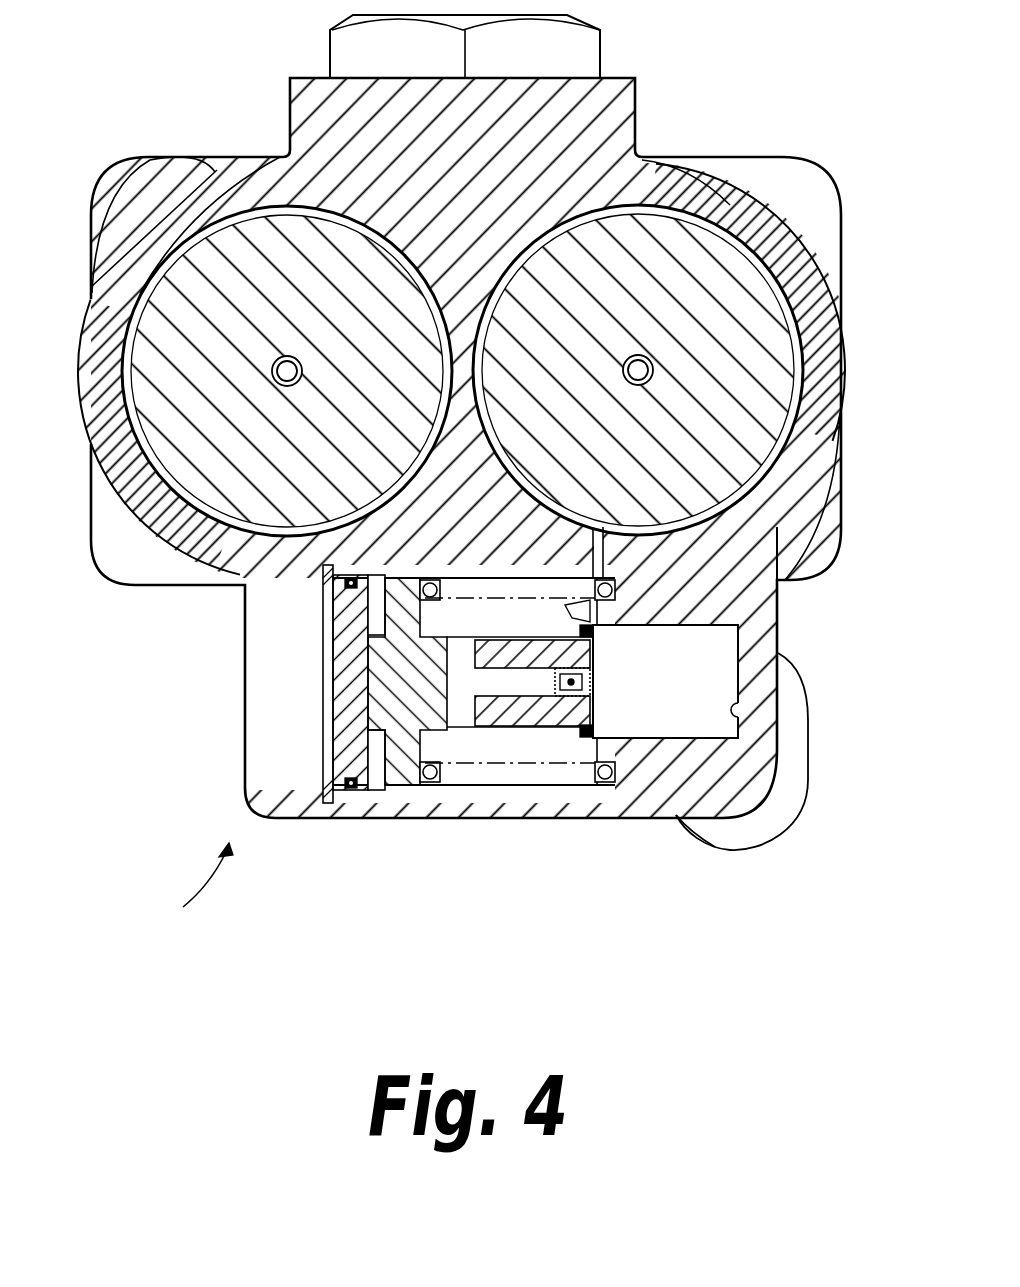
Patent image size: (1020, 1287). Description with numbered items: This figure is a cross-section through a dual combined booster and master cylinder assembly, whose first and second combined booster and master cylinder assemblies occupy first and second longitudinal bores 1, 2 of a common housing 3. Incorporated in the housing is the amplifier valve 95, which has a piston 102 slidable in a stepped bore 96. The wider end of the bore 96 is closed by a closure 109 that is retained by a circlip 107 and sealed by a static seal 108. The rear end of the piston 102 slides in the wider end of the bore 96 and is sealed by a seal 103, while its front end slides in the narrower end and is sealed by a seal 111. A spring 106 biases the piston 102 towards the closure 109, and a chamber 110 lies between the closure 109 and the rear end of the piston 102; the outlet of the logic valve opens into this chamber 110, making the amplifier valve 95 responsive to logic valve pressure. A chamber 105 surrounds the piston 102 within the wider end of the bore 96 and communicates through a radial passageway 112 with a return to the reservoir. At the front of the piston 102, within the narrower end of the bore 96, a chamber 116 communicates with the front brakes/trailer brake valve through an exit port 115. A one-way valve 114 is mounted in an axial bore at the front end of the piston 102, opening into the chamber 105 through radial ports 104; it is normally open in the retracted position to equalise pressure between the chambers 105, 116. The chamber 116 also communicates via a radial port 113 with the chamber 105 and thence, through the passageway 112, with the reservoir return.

The first longitudinal bore 1 is at (672, 208).
The second longitudinal bore 2 is at (242, 210).
The common housing 3 is at (837, 415).
The amplifier valve 95 is at (186, 895).
The stepped bore 96 is at (458, 575).
The piston 102 is at (368, 795).
The seal 103 is at (400, 788).
The radial ports 104 is at (456, 715).
The chamber 105 is at (525, 745).
The spring 106 is at (582, 772).
The circlip 107 is at (323, 567).
The static seal 108 is at (333, 600).
The closure 109 is at (345, 680).
The chamber 110 is at (378, 743).
The seal 111 is at (681, 838).
The radial passageway 112 is at (780, 583).
The radial port 113 is at (605, 612).
The one-way valve 114 is at (592, 680).
The exit port 115 is at (737, 710).
The chamber 116 is at (670, 708).